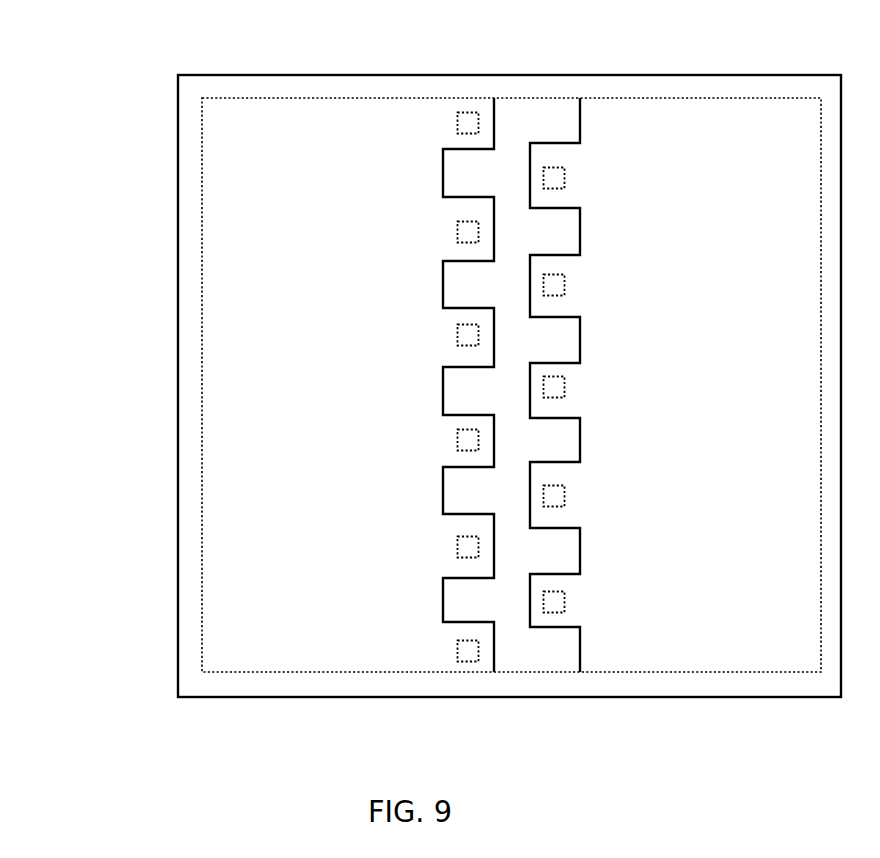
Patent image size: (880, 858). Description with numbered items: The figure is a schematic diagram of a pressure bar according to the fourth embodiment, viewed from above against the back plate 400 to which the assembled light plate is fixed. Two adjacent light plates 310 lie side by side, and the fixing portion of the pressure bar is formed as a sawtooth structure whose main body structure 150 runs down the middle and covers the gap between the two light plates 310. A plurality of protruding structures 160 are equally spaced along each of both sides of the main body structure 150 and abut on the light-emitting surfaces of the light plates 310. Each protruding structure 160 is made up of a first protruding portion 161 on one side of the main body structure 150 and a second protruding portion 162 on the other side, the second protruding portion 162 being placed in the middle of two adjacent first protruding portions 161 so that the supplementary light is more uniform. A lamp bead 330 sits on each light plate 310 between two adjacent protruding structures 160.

The back plate 400 is at (190, 95).
The light plate 310 is at (367, 628).
The main body structure 150 is at (298, 385).
The protruding structure 160 is at (298, 385).
The first protruding portion 161 is at (480, 484).
The second protruding portion 162 is at (553, 553).
The lamp bead 330 is at (462, 124).